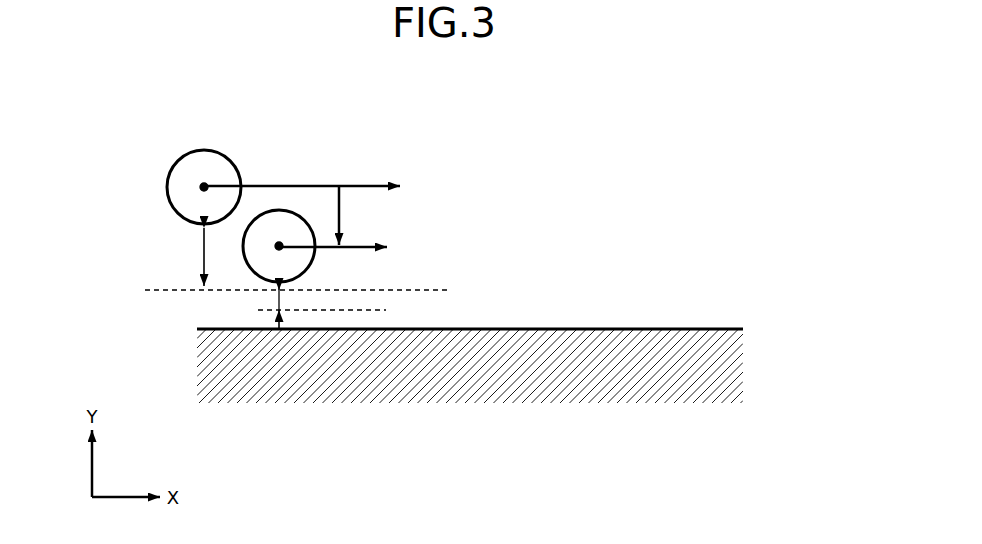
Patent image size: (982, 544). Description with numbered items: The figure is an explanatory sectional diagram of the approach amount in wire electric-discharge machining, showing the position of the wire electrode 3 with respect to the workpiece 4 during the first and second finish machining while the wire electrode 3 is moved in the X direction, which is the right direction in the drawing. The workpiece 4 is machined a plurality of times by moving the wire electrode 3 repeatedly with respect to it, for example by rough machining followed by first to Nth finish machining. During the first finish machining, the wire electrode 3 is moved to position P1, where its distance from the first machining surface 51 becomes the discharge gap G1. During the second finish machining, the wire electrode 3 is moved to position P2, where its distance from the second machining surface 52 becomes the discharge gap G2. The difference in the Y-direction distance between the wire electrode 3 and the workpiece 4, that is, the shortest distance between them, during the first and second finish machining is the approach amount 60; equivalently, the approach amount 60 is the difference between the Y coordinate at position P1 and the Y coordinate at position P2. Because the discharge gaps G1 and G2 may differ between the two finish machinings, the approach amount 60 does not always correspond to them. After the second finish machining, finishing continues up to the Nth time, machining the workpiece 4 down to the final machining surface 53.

The wire electrode 3 is at (218, 165).
The position P1 is at (202, 186).
The position P2 is at (281, 245).
The approach amount 60 is at (341, 212).
The discharge gap G1 is at (203, 256).
The discharge gap G2 is at (280, 300).
The first machining surface 51 is at (153, 293).
The second machining surface 52 is at (386, 310).
The final machining surface 53 is at (497, 330).
The workpiece 4 is at (656, 366).